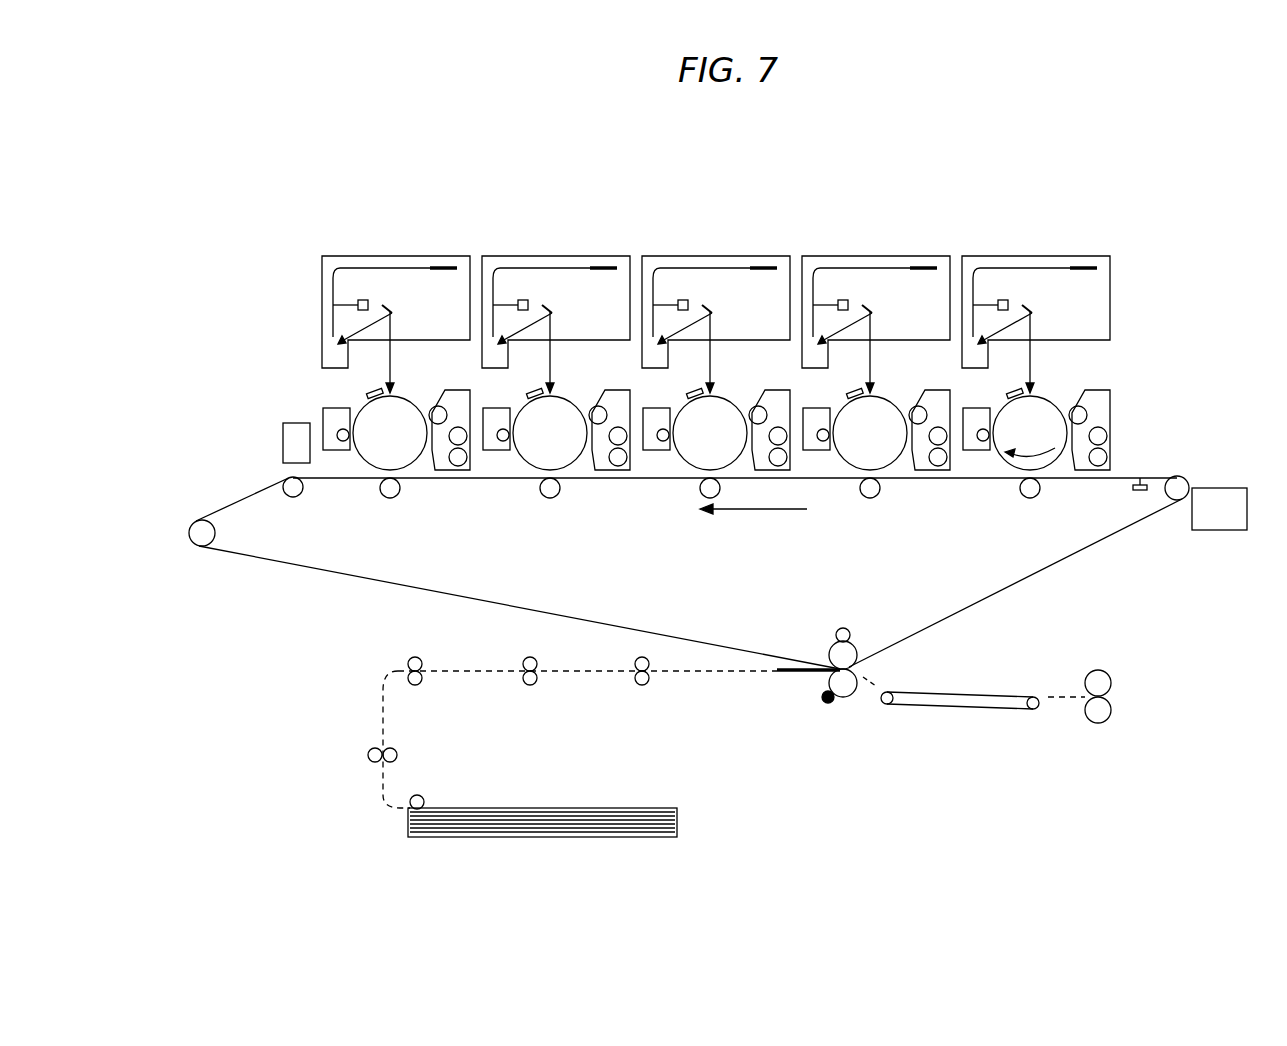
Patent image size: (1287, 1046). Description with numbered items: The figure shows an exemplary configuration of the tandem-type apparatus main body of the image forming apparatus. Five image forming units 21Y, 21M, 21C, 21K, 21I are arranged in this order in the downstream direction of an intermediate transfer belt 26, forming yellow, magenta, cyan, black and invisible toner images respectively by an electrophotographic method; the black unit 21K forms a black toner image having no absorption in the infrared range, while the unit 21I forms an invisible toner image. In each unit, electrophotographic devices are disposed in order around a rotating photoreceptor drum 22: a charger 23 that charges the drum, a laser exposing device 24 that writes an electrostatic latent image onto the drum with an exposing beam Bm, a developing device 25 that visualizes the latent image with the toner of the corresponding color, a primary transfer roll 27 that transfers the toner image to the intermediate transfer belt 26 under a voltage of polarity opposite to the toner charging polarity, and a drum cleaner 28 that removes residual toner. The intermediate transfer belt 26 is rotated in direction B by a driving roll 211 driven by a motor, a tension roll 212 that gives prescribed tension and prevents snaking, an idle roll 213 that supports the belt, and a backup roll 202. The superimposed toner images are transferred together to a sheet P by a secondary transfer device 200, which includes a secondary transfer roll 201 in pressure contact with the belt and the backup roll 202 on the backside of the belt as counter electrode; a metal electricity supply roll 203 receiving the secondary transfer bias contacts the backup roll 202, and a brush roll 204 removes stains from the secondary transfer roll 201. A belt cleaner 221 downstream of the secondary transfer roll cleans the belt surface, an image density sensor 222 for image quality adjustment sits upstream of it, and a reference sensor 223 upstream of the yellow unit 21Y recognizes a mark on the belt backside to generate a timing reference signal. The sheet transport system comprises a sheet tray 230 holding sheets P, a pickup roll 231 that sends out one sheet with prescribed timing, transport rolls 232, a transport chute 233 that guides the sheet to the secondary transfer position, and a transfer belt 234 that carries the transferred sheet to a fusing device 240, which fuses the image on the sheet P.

The image forming unit (invisible) 21I is at (393, 233).
The image forming unit (black) 21K is at (553, 233).
The image forming unit (cyan) 21C is at (713, 233).
The image forming unit (magenta) 21M is at (873, 233).
The image forming unit (yellow) 21Y is at (1039, 357).
The photoreceptor drum 22 is at (1060, 396).
The charger 23 is at (1013, 392).
The laser exposing device 24 is at (1110, 294).
The developing device 25 is at (1110, 422).
The intermediate transfer belt 26 is at (550, 610).
The primary transfer roll 27 is at (1030, 498).
The drum cleaner 28 is at (975, 448).
The secondary transfer device 200 is at (868, 672).
The secondary transfer roll 201 is at (855, 695).
The backup roll 202 is at (852, 650).
The metal electricity supply roll 203 is at (836, 631).
The brush roll 204 is at (828, 703).
The driving roll 211 is at (1186, 478).
The tension roll 212 is at (200, 546).
The idle roll 213 is at (283, 478).
The belt cleaner 221 is at (1220, 530).
The image density sensor 222 is at (290, 423).
The reference sensor (home position sensor) 223 is at (1142, 492).
The sheet tray 230 is at (678, 818).
The pickup roll 231 is at (420, 795).
The transport rolls 232 is at (410, 662).
The transport chute 233 is at (784, 673).
The transfer belt 234 is at (948, 704).
The fusing device 240 is at (1112, 712).
The belt rotation direction B is at (753, 523).
The exposing beam Bm is at (1033, 352).
The sheet P is at (548, 808).